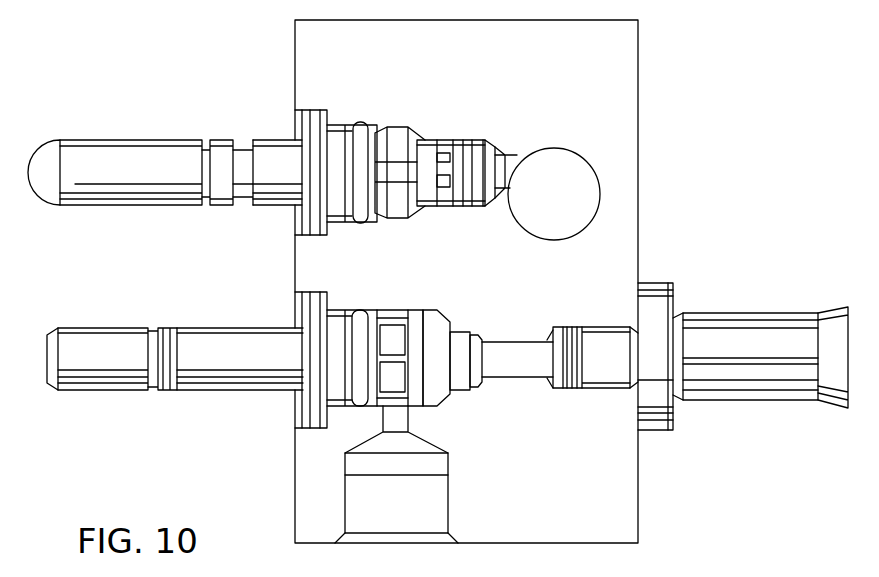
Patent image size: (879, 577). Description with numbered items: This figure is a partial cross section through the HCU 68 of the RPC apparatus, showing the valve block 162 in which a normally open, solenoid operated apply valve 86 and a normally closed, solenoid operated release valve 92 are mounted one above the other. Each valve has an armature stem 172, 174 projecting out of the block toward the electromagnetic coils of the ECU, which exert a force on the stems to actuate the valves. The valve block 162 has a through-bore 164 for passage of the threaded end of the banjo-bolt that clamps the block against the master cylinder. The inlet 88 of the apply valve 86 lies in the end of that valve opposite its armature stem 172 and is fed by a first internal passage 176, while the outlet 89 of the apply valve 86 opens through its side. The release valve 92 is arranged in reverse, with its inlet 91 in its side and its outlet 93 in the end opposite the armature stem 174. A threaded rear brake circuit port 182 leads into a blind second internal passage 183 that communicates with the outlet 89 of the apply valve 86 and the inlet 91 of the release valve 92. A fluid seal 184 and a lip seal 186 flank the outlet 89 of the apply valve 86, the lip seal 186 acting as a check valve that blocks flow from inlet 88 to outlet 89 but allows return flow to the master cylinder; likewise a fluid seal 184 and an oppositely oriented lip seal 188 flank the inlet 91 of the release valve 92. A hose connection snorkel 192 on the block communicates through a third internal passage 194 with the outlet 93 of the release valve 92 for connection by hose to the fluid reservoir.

The HCU 68 is at (667, 60).
The apply valve 86 is at (338, 147).
The inlet of the apply valve 88 is at (497, 140).
The outlet of the apply valve 89 is at (398, 215).
The inlet of the release valve 91 is at (400, 312).
The release valve 92 is at (343, 328).
The outlet of the release valve 93 is at (483, 377).
The valve block 162 is at (620, 77).
The through-bore 164 is at (565, 208).
The armature stem 172 is at (115, 160).
The armature stem 174 is at (125, 347).
The first internal passage 176 is at (497, 152).
The rear brake circuit port 182 is at (425, 508).
The second internal passage 183 is at (385, 420).
The fluid seal 184 is at (366, 125).
The lip seal 186 is at (463, 137).
The lip seal 188 is at (433, 393).
The hose connection snorkel 192 is at (743, 335).
The third internal passage 194 is at (520, 347).